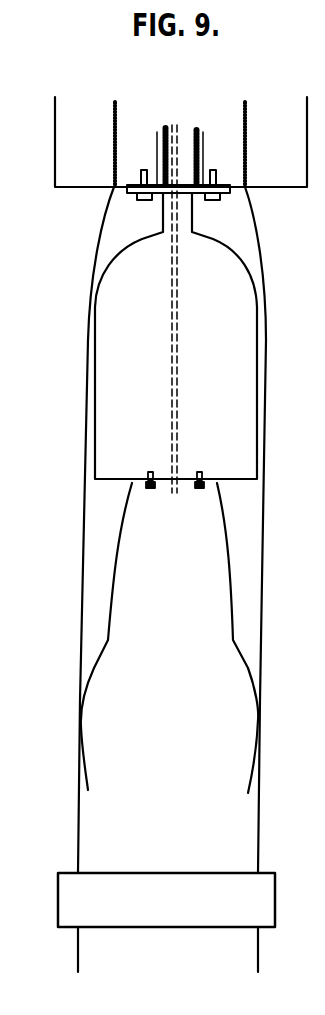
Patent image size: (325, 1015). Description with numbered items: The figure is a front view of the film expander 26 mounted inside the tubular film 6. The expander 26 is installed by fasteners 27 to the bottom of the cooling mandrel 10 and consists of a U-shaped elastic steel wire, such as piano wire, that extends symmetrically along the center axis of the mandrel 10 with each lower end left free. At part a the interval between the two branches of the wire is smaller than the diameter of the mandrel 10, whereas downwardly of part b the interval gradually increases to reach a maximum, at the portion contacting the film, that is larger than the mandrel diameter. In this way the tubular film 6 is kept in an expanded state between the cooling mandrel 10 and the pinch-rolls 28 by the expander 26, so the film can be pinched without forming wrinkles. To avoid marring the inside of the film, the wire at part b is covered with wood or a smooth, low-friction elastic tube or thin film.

The tubular film 6 is at (80, 616).
The cooling mandrel 10 is at (228, 312).
The film expander 26 is at (237, 555).
The fasteners 27 is at (200, 472).
The pinch-rolls 28 is at (183, 915).
The part a of the expander a is at (235, 615).
The part b of the expander b is at (248, 667).